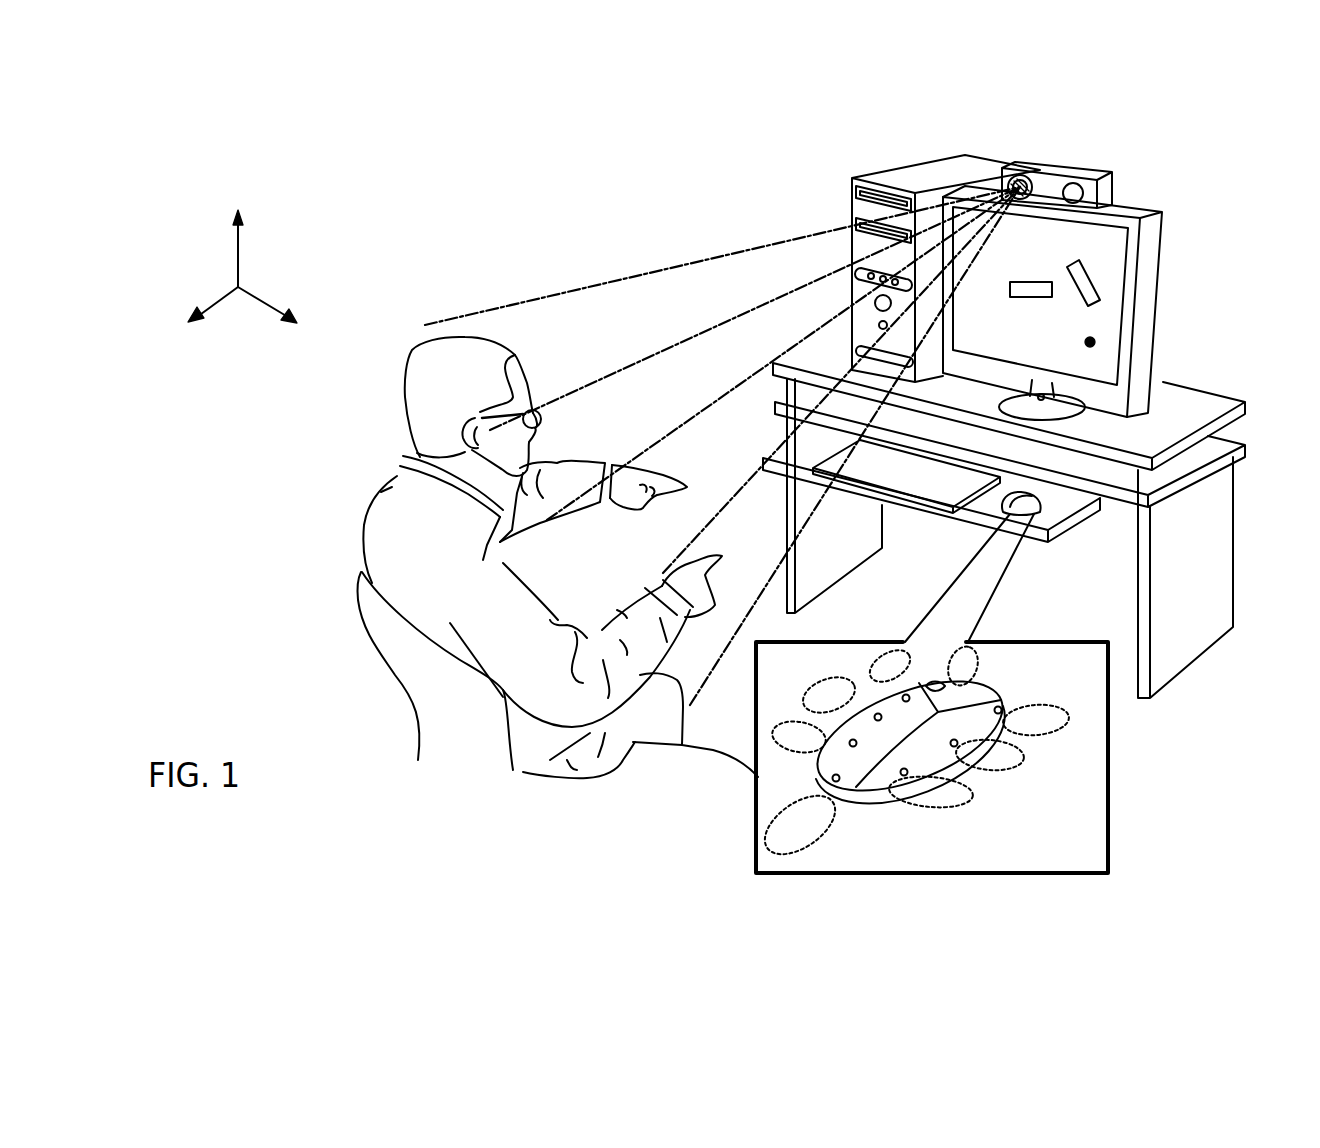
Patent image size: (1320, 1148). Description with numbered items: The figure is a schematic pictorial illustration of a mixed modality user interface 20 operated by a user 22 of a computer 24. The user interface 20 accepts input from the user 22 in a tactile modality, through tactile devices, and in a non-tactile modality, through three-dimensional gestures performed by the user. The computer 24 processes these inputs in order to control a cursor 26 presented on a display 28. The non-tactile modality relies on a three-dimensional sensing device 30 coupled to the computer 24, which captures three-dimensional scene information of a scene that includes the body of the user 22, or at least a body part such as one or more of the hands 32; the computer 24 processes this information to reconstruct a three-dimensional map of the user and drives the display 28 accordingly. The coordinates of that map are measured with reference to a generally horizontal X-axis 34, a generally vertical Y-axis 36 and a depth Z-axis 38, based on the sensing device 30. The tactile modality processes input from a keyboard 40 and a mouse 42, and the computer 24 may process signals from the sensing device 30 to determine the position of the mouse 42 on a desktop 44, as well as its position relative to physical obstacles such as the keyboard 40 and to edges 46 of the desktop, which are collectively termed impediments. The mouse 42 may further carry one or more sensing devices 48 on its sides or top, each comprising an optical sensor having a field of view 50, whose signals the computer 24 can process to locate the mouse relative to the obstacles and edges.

The mixed modality user interface 20 is at (497, 254).
The user 22 is at (406, 372).
The computer 24 is at (905, 178).
The cursor 26 is at (1094, 345).
The display 28 is at (1160, 290).
The 3D sensing device 30 is at (1122, 185).
The hands 32 is at (635, 539).
The X-axis 34 is at (272, 317).
The Y-axis 36 is at (238, 250).
The Z-axis 38 is at (203, 313).
The keyboard 40 is at (923, 488).
The mouse 42 is at (1018, 528).
The desktop 44 is at (980, 507).
The edges 46 is at (768, 472).
The sensing devices 48 is at (1000, 714).
The field of view 50 is at (819, 682).